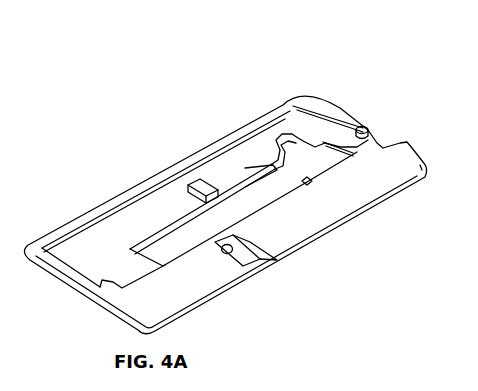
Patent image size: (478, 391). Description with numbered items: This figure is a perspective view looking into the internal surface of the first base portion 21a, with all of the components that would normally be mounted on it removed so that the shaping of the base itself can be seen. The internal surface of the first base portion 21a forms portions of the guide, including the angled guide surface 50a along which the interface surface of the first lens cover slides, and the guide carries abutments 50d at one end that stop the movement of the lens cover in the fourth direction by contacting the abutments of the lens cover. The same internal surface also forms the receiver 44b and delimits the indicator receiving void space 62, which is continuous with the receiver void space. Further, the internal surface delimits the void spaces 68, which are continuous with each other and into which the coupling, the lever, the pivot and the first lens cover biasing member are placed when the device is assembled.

The first base portion 21a is at (315, 254).
The void spaces 68 is at (114, 241).
The receiver 44b is at (219, 237).
The guide surface 50a is at (200, 186).
The abutments 50d is at (278, 164).
The indicator receiving void space 62 is at (244, 251).